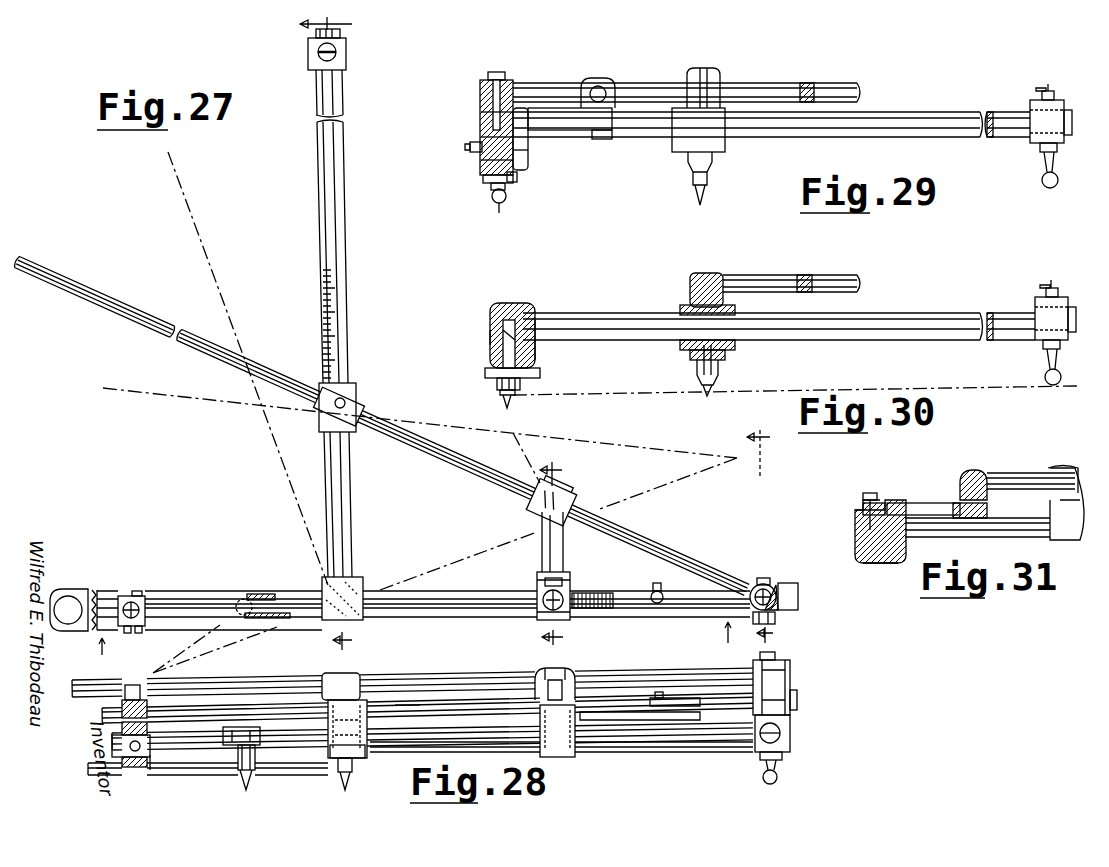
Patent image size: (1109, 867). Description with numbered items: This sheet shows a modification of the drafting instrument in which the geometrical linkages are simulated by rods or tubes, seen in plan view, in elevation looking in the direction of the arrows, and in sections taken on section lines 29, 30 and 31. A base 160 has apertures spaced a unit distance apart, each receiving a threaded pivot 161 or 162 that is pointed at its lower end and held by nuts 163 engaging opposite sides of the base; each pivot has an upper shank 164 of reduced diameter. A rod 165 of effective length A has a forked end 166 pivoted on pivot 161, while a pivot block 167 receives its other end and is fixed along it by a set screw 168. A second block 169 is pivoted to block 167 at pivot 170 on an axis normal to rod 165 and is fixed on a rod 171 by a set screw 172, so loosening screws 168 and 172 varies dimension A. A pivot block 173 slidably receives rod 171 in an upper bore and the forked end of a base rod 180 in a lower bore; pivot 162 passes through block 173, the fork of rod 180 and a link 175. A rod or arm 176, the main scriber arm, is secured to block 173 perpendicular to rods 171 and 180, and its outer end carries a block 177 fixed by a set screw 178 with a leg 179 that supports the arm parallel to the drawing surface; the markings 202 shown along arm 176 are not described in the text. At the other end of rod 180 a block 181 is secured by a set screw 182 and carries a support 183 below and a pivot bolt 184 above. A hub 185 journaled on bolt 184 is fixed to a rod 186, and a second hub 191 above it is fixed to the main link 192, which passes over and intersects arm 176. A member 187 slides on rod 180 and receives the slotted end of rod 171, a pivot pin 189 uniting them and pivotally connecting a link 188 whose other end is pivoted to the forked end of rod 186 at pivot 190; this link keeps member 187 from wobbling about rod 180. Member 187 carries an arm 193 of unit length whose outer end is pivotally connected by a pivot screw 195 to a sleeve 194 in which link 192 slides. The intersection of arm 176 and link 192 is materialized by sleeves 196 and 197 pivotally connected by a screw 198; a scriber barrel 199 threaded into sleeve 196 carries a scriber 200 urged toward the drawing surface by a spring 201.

In FIG. 27, the section line 29 is at (772, 529).
In FIG. 27, the section line 30 is at (338, 334).
In FIG. 27, the section line 31 is at (553, 554).
In FIG. 27, the base 160 is at (99, 592).
In FIG. 29, the base 160 is at (515, 178).
In FIG. 30, the base 160 is at (490, 386).
In FIG. 28, the base 160 is at (118, 776).
In FIG. 28, the threaded pivot 161 is at (250, 782).
In FIG. 29, the threaded pivot 162 is at (490, 187).
In FIG. 30, the threaded pivot 162 is at (511, 394).
In FIG. 28, the threaded pivot 162 is at (353, 775).
In FIG. 29, the nuts 163 is at (513, 183).
In FIG. 30, the nuts 163 is at (521, 382).
In FIG. 28, the nuts 163 is at (258, 770).
In FIG. 27, the reduced shank 164 is at (243, 598).
In FIG. 30, the reduced shank 164 is at (487, 372).
In FIG. 28, the reduced shank 164 is at (250, 733).
In FIG. 27, the rod 165 is at (196, 591).
In FIG. 28, the rod 165 is at (178, 751).
In FIG. 28, the forked end 166 is at (228, 746).
In FIG. 28, the pivot block 167 is at (150, 757).
In FIG. 27, the set screw 168 is at (130, 633).
In FIG. 28, the set screw 168 is at (122, 745).
In FIG. 27, the second block 169 is at (126, 596).
In FIG. 28, the second block 169 is at (122, 706).
In FIG. 28, the pivot 170 is at (147, 728).
In FIG. 27, the rod 171 is at (418, 610).
In FIG. 30, the rod 171 is at (512, 303).
In FIG. 31, the rod 171 is at (862, 500).
In FIG. 28, the rod 171 is at (395, 705).
In FIG. 27, the set screw 172 is at (140, 591).
In FIG. 28, the set screw 172 is at (130, 685).
In FIG. 27, the pivot block 173 is at (359, 590).
In FIG. 30, the pivot block 173 is at (536, 350).
In FIG. 28, the pivot block 173 is at (367, 757).
In FIG. 27, the link 175 is at (290, 591).
In FIG. 30, the link 175 is at (490, 340).
In FIG. 28, the link 175 is at (285, 736).
In FIG. 27, the arm 176 is at (340, 263).
In FIG. 29, the arm 176 is at (850, 136).
In FIG. 30, the arm 176 is at (925, 313).
In FIG. 31, the arm 176 is at (925, 537).
In FIG. 28, the arm 176 is at (427, 708).
In FIG. 27, the block 177 is at (347, 62).
In FIG. 29, the block 177 is at (1032, 136).
In FIG. 30, the block 177 is at (1036, 334).
In FIG. 27, the set screw 178 is at (319, 55).
In FIG. 29, the set screw 178 is at (1040, 91).
In FIG. 30, the set screw 178 is at (1048, 287).
In FIG. 29, the leg 179 is at (1041, 184).
In FIG. 30, the leg 179 is at (1046, 372).
In FIG. 27, the base rod 180 is at (620, 590).
In FIG. 29, the base rod 180 is at (482, 162).
In FIG. 30, the base rod 180 is at (492, 322).
In FIG. 31, the base rod 180 is at (860, 540).
In FIG. 28, the base rod 180 is at (665, 748).
In FIG. 27, the block 181 is at (790, 584).
In FIG. 29, the block 181 is at (525, 165).
In FIG. 28, the block 181 is at (790, 748).
In FIG. 27, the set screw 182 is at (778, 618).
In FIG. 29, the set screw 182 is at (470, 149).
In FIG. 28, the set screw 182 is at (758, 752).
In FIG. 29, the support 183 is at (492, 197).
In FIG. 28, the support 183 is at (778, 776).
In FIG. 27, the pivot bolt 184 is at (755, 588).
In FIG. 29, the pivot bolt 184 is at (505, 63).
In FIG. 28, the pivot bolt 184 is at (758, 659).
In FIG. 29, the hub 185 is at (481, 118).
In FIG. 28, the hub 185 is at (790, 710).
In FIG. 27, the rod 186 is at (685, 600).
In FIG. 29, the rod 186 is at (481, 127).
In FIG. 28, the rod 186 is at (797, 695).
In FIG. 27, the member 187 is at (537, 584).
In FIG. 29, the member 187 is at (530, 155).
In FIG. 31, the member 187 is at (886, 562).
In FIG. 28, the member 187 is at (566, 751).
In FIG. 27, the link 188 is at (600, 608).
In FIG. 31, the link 188 is at (862, 510).
In FIG. 28, the link 188 is at (580, 706).
In FIG. 27, the pivot pin 189 is at (541, 608).
In FIG. 31, the pivot pin 189 is at (878, 487).
In FIG. 28, the pivot pin 189 is at (560, 681).
In FIG. 27, the pivot 190 is at (657, 590).
In FIG. 28, the pivot 190 is at (655, 696).
In FIG. 27, the second hub 191 is at (765, 588).
In FIG. 29, the second hub 191 is at (480, 88).
In FIG. 28, the second hub 191 is at (787, 666).
In FIG. 27, the link 192 is at (120, 305).
In FIG. 29, the link 192 is at (637, 83).
In FIG. 30, the link 192 is at (835, 280).
In FIG. 31, the link 192 is at (1008, 476).
In FIG. 28, the link 192 is at (660, 665).
In FIG. 27, the arm 193 is at (560, 548).
In FIG. 29, the arm 193 is at (576, 120).
In FIG. 31, the arm 193 is at (925, 507).
In FIG. 27, the sleeve 194 is at (563, 497).
In FIG. 29, the sleeve 194 is at (596, 80).
In FIG. 31, the sleeve 194 is at (963, 478).
In FIG. 28, the sleeve 194 is at (540, 670).
In FIG. 27, the pivot screw 195 is at (556, 488).
In FIG. 29, the pivot screw 195 is at (610, 136).
In FIG. 31, the pivot screw 195 is at (968, 520).
In FIG. 27, the sleeve 196 is at (320, 427).
In FIG. 29, the sleeve 196 is at (683, 146).
In FIG. 30, the sleeve 196 is at (737, 350).
In FIG. 31, the sleeve 196 is at (1058, 520).
In FIG. 27, the sleeve 197 is at (366, 403).
In FIG. 29, the sleeve 197 is at (695, 78).
In FIG. 30, the sleeve 197 is at (690, 281).
In FIG. 31, the sleeve 197 is at (1060, 468).
In FIG. 28, the sleeve 197 is at (322, 674).
In FIG. 27, the screw 198 is at (355, 394).
In FIG. 30, the screw 198 is at (682, 306).
In FIG. 29, the scriber barrel 199 is at (712, 165).
In FIG. 30, the scriber barrel 199 is at (720, 372).
In FIG. 29, the scriber 200 is at (696, 194).
In FIG. 30, the scriber 200 is at (700, 384).
In FIG. 30, the spring 201 is at (690, 360).
In FIG. 27, the scale graduations 202 is at (322, 291).